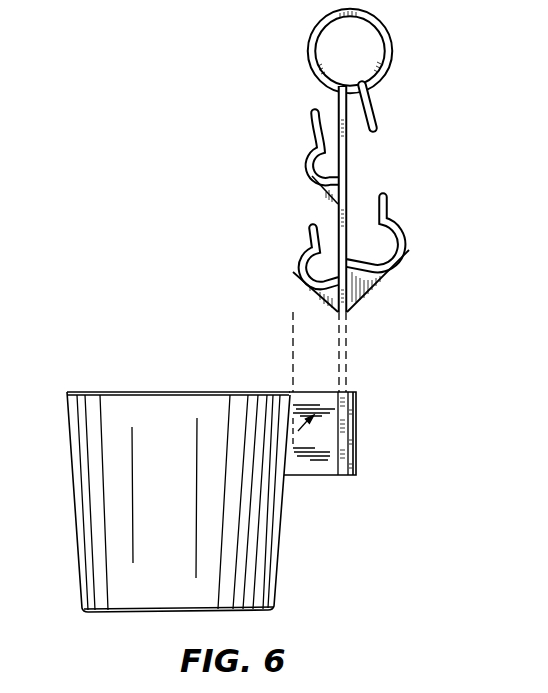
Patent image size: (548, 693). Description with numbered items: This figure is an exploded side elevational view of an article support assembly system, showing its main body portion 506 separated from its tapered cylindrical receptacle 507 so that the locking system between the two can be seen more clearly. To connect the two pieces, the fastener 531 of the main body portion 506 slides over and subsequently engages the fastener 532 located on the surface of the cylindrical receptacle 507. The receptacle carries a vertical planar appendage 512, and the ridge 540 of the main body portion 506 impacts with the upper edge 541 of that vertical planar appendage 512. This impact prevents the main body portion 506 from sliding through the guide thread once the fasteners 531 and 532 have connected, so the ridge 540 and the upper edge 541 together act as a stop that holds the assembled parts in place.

The main body portion 506 is at (311, 161).
The ridge 540 is at (355, 195).
The fastener 531 is at (291, 258).
The upper edge 541 is at (340, 392).
The fastener 532 is at (357, 413).
The vertical planar appendage 512 is at (359, 434).
The cylindrical receptacle 507 is at (100, 543).